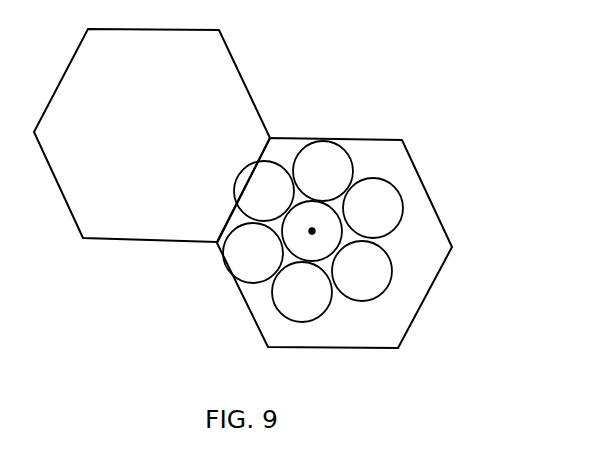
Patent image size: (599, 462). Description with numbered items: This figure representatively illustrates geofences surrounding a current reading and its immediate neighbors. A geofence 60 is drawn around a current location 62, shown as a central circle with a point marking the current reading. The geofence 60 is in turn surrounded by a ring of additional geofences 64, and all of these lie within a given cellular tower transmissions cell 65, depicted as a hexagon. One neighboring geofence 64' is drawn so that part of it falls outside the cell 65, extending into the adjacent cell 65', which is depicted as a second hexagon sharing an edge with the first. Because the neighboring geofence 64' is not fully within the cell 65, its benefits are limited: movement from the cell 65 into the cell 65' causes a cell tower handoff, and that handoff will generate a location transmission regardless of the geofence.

The geofence 60 is at (313, 208).
The current location 62 is at (312, 231).
The additional geofences 64 is at (349, 208).
The neighboring geofence 64' is at (215, 191).
The cellular tower transmissions cell 65 is at (390, 243).
The cell 65' is at (176, 133).